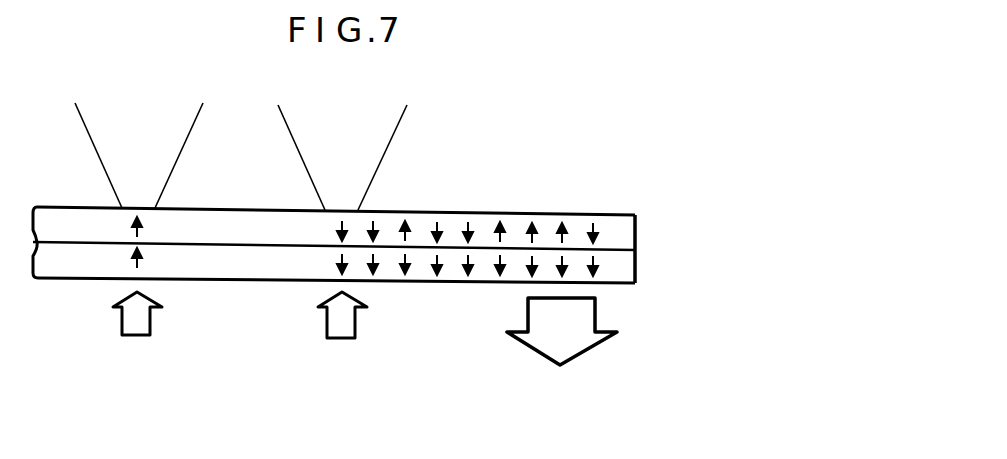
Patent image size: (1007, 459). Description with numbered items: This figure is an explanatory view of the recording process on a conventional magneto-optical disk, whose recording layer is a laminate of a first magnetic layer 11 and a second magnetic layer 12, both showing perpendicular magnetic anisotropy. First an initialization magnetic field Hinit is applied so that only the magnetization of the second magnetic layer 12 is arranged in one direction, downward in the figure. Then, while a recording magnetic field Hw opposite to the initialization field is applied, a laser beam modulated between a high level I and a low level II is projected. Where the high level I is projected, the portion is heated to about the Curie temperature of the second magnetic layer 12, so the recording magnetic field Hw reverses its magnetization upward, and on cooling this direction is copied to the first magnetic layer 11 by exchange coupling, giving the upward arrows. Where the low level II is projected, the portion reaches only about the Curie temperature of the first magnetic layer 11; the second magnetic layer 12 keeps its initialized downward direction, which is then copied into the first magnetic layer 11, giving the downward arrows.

The first magnetic layer 11 is at (637, 232).
The second magnetic layer 12 is at (637, 268).
The high level I is at (139, 142).
The low level II is at (342, 143).
The recording magnetic field Hw is at (253, 328).
The initialization magnetic field Hinit is at (583, 333).